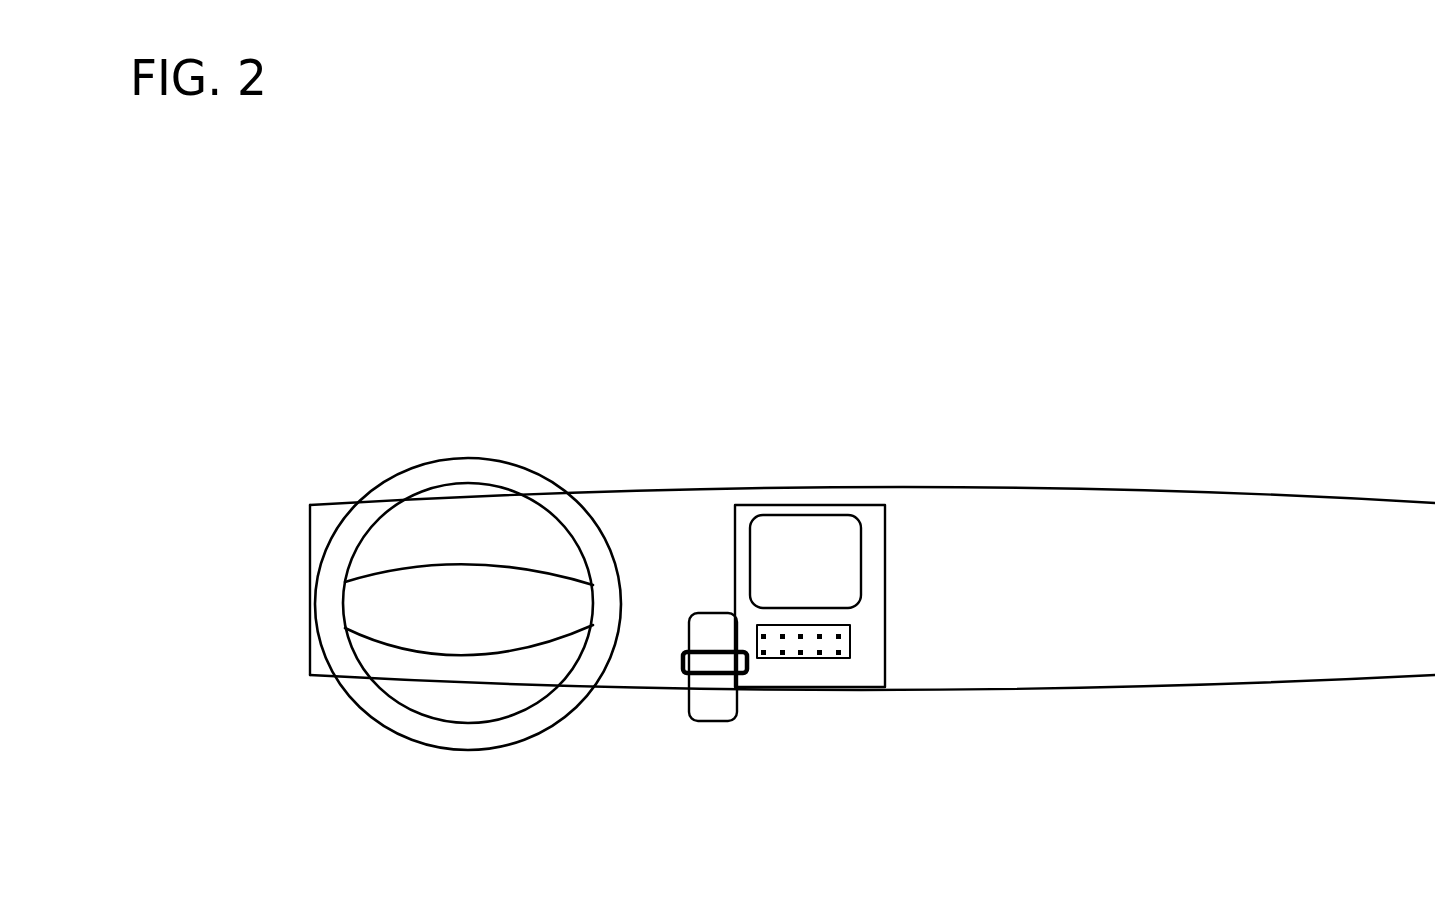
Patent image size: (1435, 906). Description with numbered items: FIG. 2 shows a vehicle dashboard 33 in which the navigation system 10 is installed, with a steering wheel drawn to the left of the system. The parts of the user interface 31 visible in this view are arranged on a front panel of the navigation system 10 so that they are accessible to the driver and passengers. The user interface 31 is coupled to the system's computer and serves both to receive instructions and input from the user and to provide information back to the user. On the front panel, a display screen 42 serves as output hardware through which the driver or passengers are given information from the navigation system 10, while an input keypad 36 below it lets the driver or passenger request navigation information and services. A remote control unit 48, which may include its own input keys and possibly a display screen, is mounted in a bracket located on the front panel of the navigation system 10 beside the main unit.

The navigation system 10 is at (927, 501).
The user interface 31 is at (851, 613).
The dashboard 33 is at (1305, 488).
The input keypad 36 is at (828, 662).
The display screen 42 is at (795, 545).
The remote control unit 48 is at (675, 660).